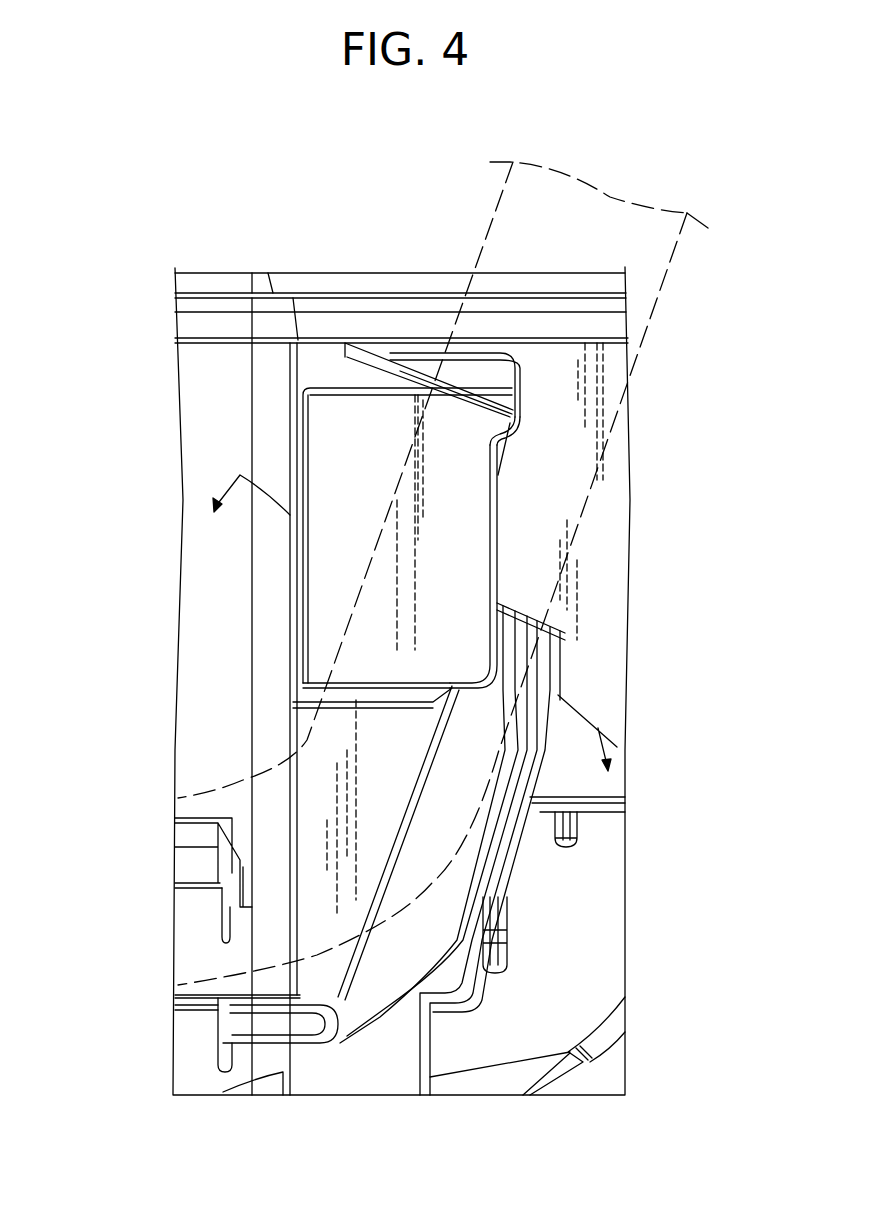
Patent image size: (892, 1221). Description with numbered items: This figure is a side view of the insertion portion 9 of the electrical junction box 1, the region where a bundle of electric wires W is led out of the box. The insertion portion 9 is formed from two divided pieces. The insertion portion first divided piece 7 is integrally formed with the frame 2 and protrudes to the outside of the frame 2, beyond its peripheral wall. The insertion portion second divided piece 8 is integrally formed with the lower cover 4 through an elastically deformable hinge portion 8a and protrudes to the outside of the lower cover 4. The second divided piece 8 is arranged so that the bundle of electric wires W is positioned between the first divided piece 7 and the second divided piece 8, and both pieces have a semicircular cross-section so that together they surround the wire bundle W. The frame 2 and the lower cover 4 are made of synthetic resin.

The electrical junction box 1 is at (735, 111).
The frame 2 is at (208, 668).
The lower cover 4 is at (593, 1057).
The insertion portion first divided piece 7 is at (429, 361).
The insertion portion second divided piece 8 is at (560, 655).
The hinge portion 8a is at (327, 1097).
The insertion portion 9 is at (553, 508).
The bundle of electric wires W is at (672, 262).